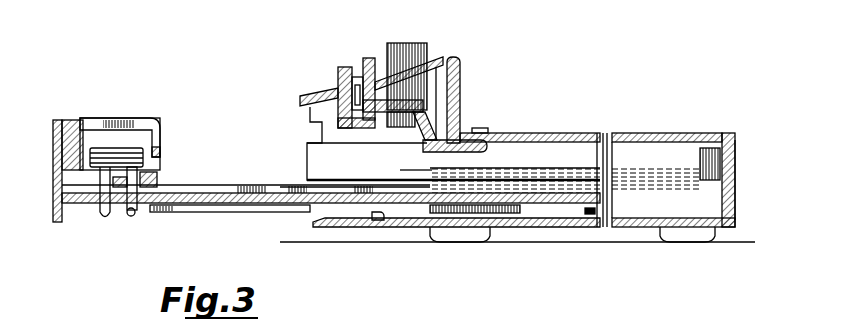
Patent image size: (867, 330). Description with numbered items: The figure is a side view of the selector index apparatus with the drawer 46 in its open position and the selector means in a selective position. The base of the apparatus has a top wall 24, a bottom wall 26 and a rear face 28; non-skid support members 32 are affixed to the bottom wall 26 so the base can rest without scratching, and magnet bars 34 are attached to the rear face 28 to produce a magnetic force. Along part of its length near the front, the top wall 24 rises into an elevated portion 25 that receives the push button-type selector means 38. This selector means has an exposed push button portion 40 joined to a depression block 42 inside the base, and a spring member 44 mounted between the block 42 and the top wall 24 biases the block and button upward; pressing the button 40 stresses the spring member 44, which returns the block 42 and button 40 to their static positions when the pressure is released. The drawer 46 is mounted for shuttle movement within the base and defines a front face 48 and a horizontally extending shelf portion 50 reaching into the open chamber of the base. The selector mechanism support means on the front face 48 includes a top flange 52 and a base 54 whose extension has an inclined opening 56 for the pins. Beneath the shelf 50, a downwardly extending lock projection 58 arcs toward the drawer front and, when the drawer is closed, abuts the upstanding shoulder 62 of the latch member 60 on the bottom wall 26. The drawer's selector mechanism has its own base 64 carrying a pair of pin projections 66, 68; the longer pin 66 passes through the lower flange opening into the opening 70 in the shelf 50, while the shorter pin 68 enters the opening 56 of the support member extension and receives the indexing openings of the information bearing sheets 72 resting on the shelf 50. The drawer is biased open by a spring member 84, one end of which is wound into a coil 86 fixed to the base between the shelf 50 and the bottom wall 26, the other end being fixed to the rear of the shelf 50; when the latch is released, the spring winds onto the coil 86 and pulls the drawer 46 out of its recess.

The top wall 24 is at (648, 133).
The elevated portion 25 is at (460, 58).
The bottom wall 26 is at (548, 228).
The rear face 28 is at (736, 178).
The non-skid support members 32 is at (445, 243).
The magnet bars 34 is at (712, 160).
The push button-type selector means 38 is at (378, 46).
The push button portion 40 is at (338, 68).
The depression block 42 is at (352, 130).
The spring member 44 is at (430, 150).
The drawer 46 is at (95, 114).
The front face 48 is at (58, 176).
The shelf portion 50 is at (268, 186).
The top flange 52 is at (143, 118).
The base 54 is at (72, 121).
The opening 56 is at (152, 180).
The lock projection 58 is at (193, 210).
The latch member 60 is at (330, 228).
The upstanding shoulder 62 is at (378, 222).
The base 64 is at (110, 160).
The pin projection 66 is at (103, 215).
The pin projection 68 is at (130, 212).
The opening 70 is at (116, 215).
The information bearing sheets 72 is at (517, 165).
The spring member 84 is at (590, 222).
The coil 86 is at (510, 214).